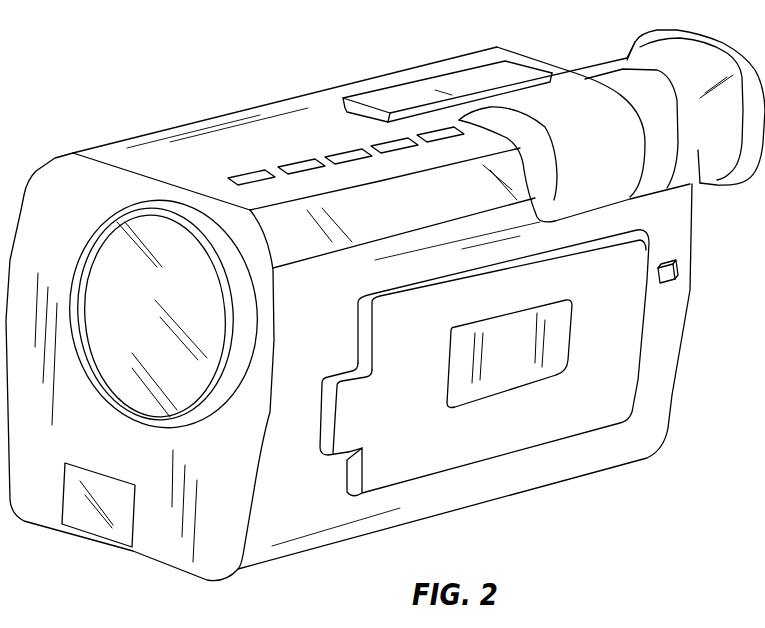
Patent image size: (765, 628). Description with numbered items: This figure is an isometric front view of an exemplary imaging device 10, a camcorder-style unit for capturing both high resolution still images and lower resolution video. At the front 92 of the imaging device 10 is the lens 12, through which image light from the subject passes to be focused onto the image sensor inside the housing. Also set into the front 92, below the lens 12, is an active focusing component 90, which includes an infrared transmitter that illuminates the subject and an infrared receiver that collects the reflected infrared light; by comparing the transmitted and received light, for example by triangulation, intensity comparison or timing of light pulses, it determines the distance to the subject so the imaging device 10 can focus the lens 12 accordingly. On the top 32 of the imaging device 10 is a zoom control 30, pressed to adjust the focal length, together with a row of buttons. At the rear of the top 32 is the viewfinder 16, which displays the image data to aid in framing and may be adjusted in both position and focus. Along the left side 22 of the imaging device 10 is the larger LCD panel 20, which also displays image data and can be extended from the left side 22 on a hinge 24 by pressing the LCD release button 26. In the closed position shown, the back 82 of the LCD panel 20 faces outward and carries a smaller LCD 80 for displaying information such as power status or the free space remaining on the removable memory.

The imaging device 10 is at (129, 104).
The lens 12 is at (109, 314).
The viewfinder 16 is at (634, 43).
The LCD panel 20 is at (644, 340).
The left side 22 is at (299, 317).
The hinge 24 is at (328, 470).
The LCD release button 26 is at (677, 271).
The zoom control 30 is at (356, 115).
The top 32 is at (179, 177).
The LCD 80 is at (496, 365).
The back 82 is at (592, 340).
The active focusing component 90 is at (90, 534).
The front 92 is at (44, 221).